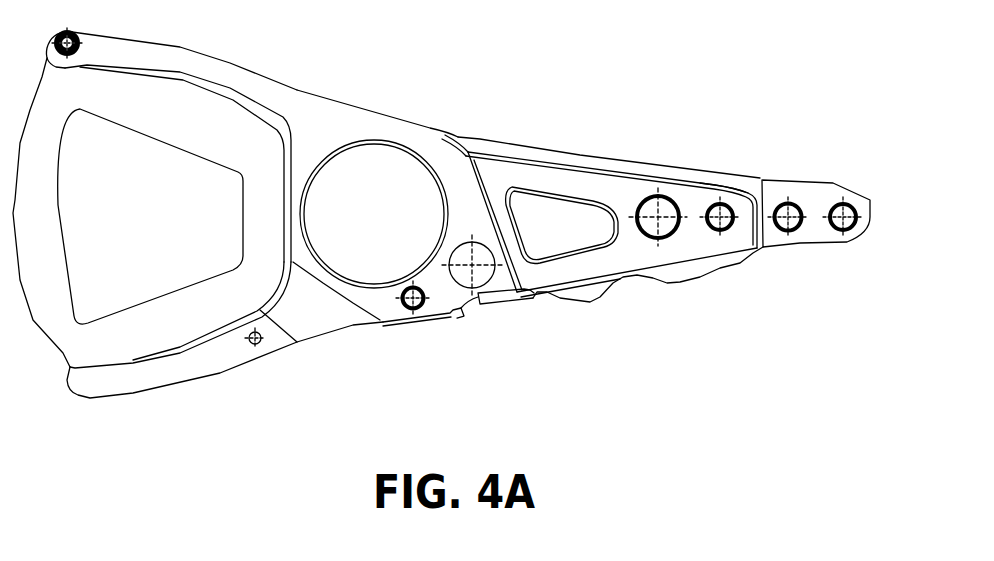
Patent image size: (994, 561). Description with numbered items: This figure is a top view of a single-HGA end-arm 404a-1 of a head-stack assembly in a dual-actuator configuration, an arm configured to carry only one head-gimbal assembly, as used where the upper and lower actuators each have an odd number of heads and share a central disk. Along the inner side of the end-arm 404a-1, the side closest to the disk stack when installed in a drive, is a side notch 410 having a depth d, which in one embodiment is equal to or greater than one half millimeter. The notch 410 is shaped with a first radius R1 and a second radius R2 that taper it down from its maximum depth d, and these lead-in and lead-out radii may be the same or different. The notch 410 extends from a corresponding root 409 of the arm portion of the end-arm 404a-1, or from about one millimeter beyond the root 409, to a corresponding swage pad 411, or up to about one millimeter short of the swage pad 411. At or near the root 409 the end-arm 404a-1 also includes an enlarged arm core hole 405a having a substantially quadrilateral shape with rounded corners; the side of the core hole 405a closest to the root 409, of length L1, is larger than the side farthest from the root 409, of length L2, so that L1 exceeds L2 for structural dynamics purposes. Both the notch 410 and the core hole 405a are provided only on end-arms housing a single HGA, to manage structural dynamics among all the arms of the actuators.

The root 409 is at (441, 127).
The first radius R1 is at (466, 137).
The side notch 410 is at (603, 162).
The second radius R2 is at (716, 178).
The swage pad 411 is at (771, 190).
The depth d is at (562, 171).
The length of the side closest to the root L1 is at (545, 258).
The length of the side farthest from the root L2 is at (578, 197).
The arm core hole 405a is at (560, 232).
The end-arm 404a-1 is at (676, 283).